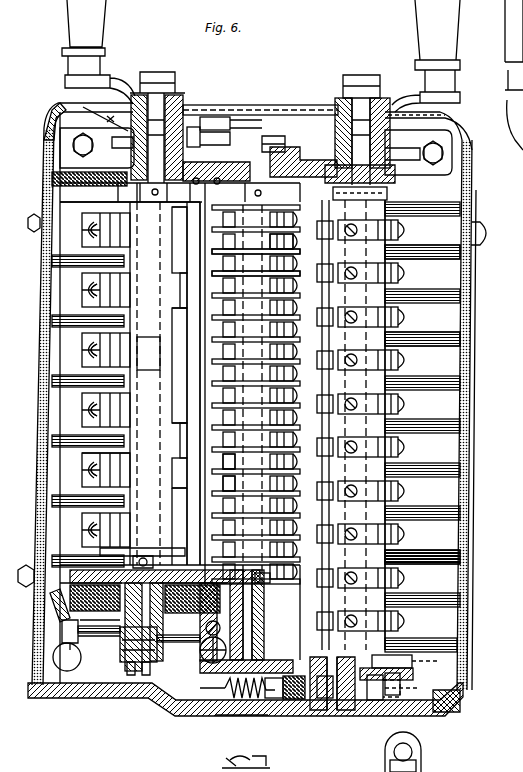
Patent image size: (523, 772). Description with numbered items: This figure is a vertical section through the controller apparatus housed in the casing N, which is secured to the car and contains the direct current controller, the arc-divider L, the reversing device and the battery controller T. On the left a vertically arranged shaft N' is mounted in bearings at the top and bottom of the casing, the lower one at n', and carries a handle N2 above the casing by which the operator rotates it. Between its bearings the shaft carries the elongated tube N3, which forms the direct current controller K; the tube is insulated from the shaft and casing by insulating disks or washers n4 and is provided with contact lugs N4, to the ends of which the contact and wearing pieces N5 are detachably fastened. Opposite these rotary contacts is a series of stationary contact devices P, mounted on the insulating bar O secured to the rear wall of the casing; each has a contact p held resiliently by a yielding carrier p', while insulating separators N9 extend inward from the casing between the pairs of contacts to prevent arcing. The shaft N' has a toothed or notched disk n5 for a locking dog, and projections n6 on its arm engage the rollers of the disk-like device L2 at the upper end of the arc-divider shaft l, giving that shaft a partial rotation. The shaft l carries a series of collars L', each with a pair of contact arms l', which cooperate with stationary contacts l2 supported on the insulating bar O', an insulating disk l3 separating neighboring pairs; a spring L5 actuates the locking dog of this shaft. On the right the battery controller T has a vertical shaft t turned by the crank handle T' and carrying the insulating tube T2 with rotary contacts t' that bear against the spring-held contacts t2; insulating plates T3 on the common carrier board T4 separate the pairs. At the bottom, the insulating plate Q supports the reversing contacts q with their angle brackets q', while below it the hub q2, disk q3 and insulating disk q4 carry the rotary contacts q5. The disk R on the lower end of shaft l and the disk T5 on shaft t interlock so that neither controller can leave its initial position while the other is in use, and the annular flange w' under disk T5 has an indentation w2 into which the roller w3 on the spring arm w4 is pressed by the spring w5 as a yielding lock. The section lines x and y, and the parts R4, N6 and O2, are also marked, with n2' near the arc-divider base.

The casing N is at (255, 417).
The battery controller T is at (464, 415).
The insulating plates T3 is at (472, 203).
The carrier board T4 is at (486, 232).
The handle N2 is at (85, 52).
The vertical shaft t is at (424, 347).
The shaft N' is at (190, 117).
The notched disk n5 is at (74, 100).
The section line x is at (109, 120).
The disk-like device L2 is at (283, 145).
The arc-divider shaft l is at (260, 374).
The projections n6 is at (192, 122).
The spring L5 is at (218, 122).
The crank handle T' is at (256, 148).
The stationary contact device P is at (80, 362).
The contact p is at (91, 390).
The yielding carrier p' is at (87, 365).
The bearing n' is at (89, 362).
The tube N3 is at (174, 250).
The support R4 is at (182, 223).
The contact lugs N4 is at (175, 288).
The contact and wearing piece N5 is at (176, 380).
The direct current controller K is at (189, 383).
The support piece N6 is at (165, 407).
The insulating separators N9 is at (72, 492).
The insulating bar O is at (179, 526).
The insulating disks n4 is at (143, 547).
The arc-divider L is at (256, 387).
The collars L' is at (275, 394).
The stationary contacts l2 is at (296, 532).
The insulating disk l3 is at (296, 562).
The contact arms l' is at (255, 392).
The insulating bar O' is at (217, 486).
The rotary contacts t' is at (378, 426).
The spring held contacts t2 is at (417, 493).
The insulating tube T2 is at (367, 335).
The disk T5 is at (397, 660).
The plate O2 is at (328, 198).
The disk R is at (263, 663).
The piece n2' is at (277, 577).
The insulating plate Q is at (210, 629).
The section line y is at (213, 650).
The contacts q is at (56, 615).
The rotary contacts q5 is at (67, 645).
The angle bracket q' is at (99, 640).
The hub q2 is at (138, 644).
The disk q3 is at (192, 665).
The insulating disk q4 is at (157, 676).
The spring w5 is at (238, 716).
The spring arm w4 is at (276, 712).
The roller w3 is at (302, 700).
The indentation w2 is at (310, 717).
The annular flange w' is at (390, 704).